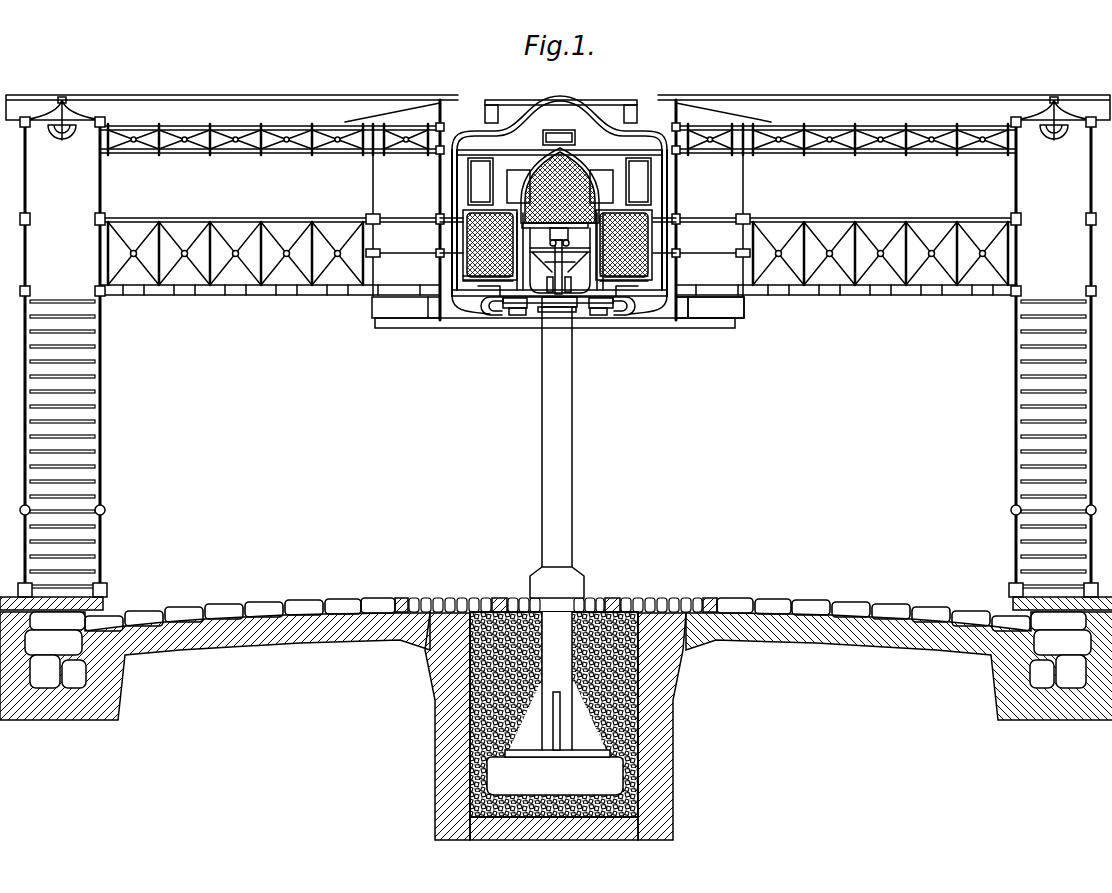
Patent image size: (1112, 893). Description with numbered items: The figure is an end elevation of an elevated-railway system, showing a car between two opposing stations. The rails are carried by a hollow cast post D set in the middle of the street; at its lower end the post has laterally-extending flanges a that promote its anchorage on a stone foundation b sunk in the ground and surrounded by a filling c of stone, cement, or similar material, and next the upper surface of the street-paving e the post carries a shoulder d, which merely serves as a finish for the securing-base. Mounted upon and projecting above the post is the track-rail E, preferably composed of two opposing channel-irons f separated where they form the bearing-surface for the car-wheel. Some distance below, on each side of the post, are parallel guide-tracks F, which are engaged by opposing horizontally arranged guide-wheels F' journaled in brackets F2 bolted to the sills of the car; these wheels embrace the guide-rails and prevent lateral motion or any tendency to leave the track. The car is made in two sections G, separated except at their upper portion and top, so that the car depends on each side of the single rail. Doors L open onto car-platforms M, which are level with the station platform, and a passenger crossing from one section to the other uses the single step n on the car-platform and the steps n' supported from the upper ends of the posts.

The car-section G is at (559, 181).
The doors L is at (653, 213).
The car-platforms M is at (555, 286).
The track-rail E is at (586, 340).
The single steps n is at (559, 267).
The steps n' is at (551, 278).
The channel-irons f is at (562, 270).
The guide-tracks F is at (558, 327).
The guide-wheels F' is at (561, 327).
The brackets F2 is at (632, 306).
The posts D is at (573, 436).
The shoulder d is at (584, 576).
The street-paving e is at (614, 598).
The filling material c is at (640, 680).
The laterally-extending flanges a is at (575, 746).
The stone foundation b is at (555, 776).